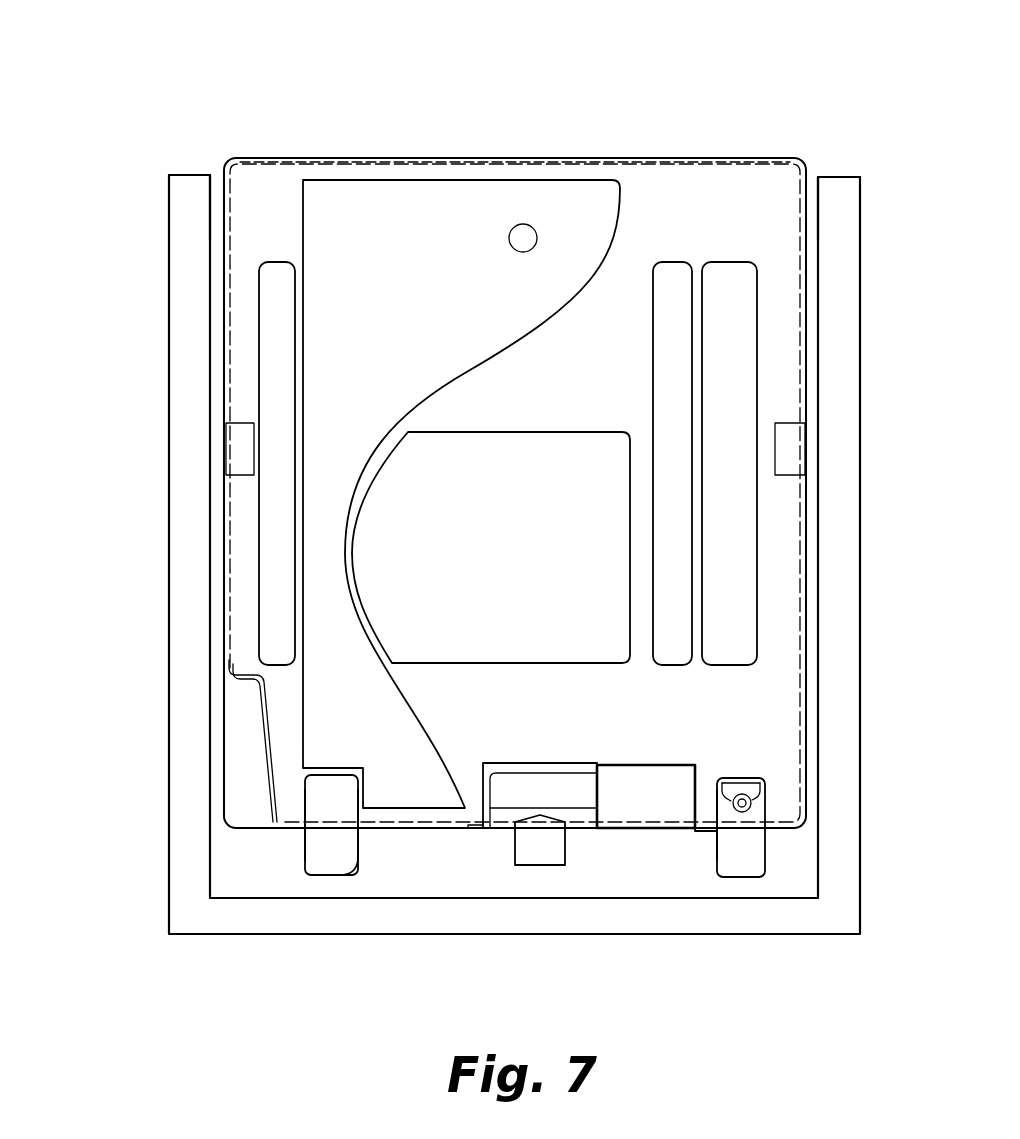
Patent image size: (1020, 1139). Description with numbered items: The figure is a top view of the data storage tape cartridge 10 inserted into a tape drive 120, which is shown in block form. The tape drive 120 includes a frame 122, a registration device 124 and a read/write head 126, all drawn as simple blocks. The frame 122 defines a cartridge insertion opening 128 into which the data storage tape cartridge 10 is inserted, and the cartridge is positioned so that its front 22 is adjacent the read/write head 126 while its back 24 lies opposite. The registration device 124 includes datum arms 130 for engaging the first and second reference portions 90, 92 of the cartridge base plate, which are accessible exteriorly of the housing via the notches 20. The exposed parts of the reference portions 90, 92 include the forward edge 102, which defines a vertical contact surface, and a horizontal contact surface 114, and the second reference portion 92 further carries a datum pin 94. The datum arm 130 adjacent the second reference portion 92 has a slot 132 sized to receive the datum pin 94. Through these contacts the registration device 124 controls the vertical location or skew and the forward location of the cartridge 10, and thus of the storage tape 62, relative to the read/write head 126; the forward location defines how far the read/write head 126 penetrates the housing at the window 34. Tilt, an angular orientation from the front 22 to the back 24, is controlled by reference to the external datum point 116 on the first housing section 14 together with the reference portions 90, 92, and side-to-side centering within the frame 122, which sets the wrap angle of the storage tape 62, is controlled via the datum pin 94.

The data storage tape cartridge 10 is at (553, 143).
The first housing section 14 is at (728, 180).
The notches 20 is at (333, 775).
The front 22 is at (452, 830).
The back 24 is at (643, 158).
The window 34 is at (521, 763).
The storage tape 62 is at (566, 805).
The first reference portion 90 is at (347, 792).
The second reference portion 92 is at (749, 798).
The datum pin 94 is at (748, 803).
The forward edge 102 is at (350, 877).
The horizontal contact surface 114 is at (318, 787).
The external datum point 116 is at (509, 235).
The tape drive 120 is at (155, 636).
The frame 122 is at (251, 950).
The registration device 124 is at (337, 898).
The read/write head 126 is at (540, 857).
The cartridge insertion opening 128 is at (212, 182).
The datum arms 130 is at (318, 862).
The slot 132 is at (735, 797).